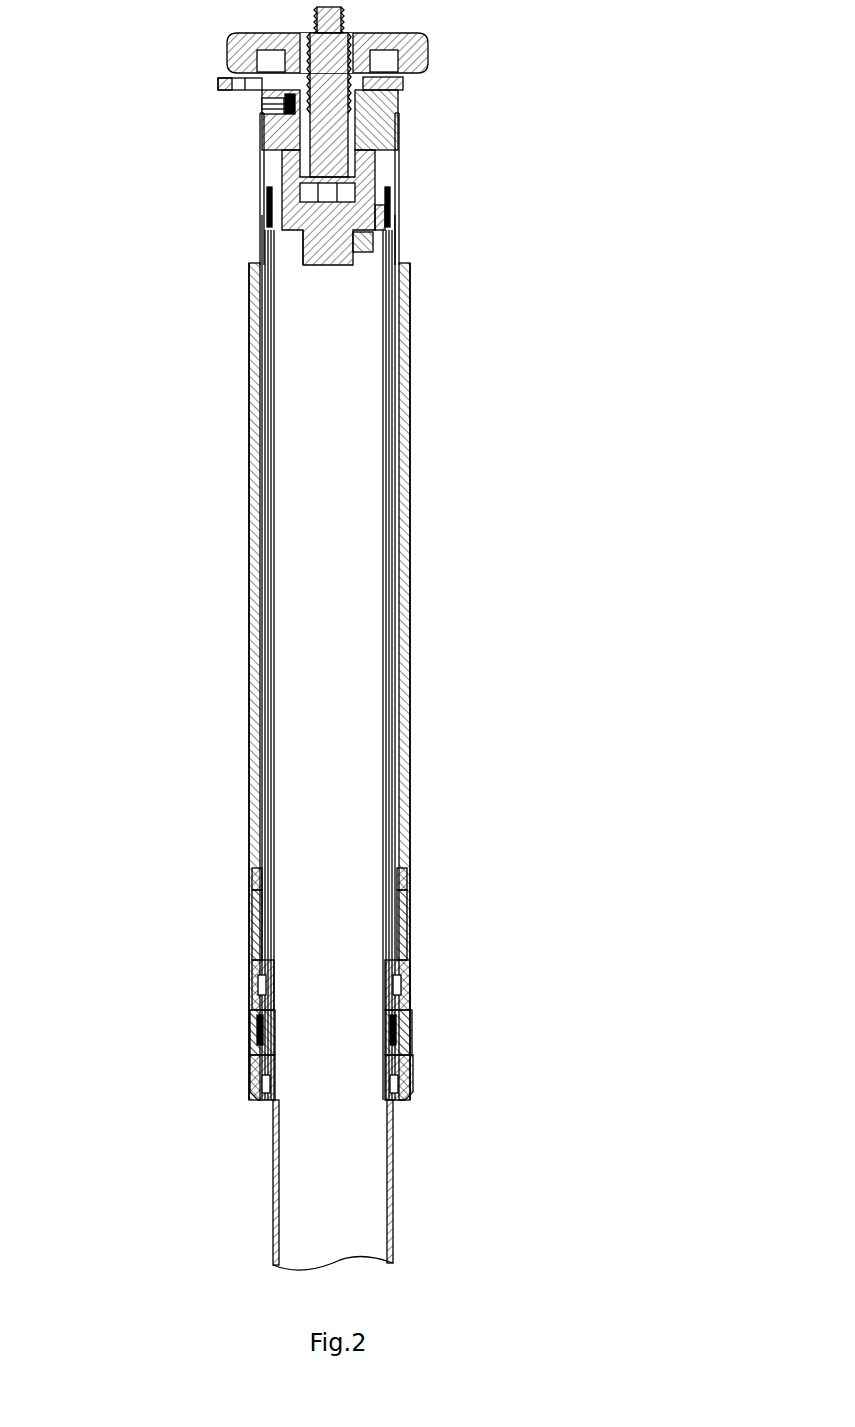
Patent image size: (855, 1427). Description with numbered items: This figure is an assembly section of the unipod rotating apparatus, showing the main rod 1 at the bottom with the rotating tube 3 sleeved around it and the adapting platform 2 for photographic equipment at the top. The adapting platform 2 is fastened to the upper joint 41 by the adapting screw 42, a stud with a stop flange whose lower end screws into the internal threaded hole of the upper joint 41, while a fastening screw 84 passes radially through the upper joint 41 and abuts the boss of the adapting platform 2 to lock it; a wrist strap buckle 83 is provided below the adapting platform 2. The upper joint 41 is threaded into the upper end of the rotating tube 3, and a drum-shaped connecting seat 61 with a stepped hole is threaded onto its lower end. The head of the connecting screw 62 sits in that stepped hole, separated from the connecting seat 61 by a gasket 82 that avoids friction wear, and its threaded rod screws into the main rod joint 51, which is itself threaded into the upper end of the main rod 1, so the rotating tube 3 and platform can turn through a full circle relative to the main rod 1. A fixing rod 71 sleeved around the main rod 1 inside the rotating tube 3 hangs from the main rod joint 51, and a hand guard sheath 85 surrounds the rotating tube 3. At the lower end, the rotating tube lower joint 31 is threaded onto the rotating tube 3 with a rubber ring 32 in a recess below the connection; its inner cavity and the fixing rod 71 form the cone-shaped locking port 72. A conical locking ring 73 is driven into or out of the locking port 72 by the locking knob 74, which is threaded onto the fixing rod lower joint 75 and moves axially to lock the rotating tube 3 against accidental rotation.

The main rod 1 is at (393, 1148).
The adapting platform 2 is at (430, 55).
The rotating tube 3 is at (250, 430).
The rotating tube lower joint 31 is at (255, 903).
The rubber ring 32 is at (255, 880).
The upper joint 41 is at (260, 143).
The adapting screw 42 is at (400, 120).
The main rod joint 51 is at (408, 295).
The connecting seat 61 is at (262, 215).
The connecting screw 62 is at (400, 245).
The fixing rod 71 is at (400, 423).
The locking port 72 is at (255, 957).
The locking ring 73 is at (413, 950).
The locking knob 74 is at (418, 1050).
The fixing rod lower joint 75 is at (255, 1100).
The gasket 82 is at (398, 217).
The wrist strap buckle 83 is at (218, 85).
The fastening screw 84 is at (258, 115).
The hand guard sheath 85 is at (250, 570).